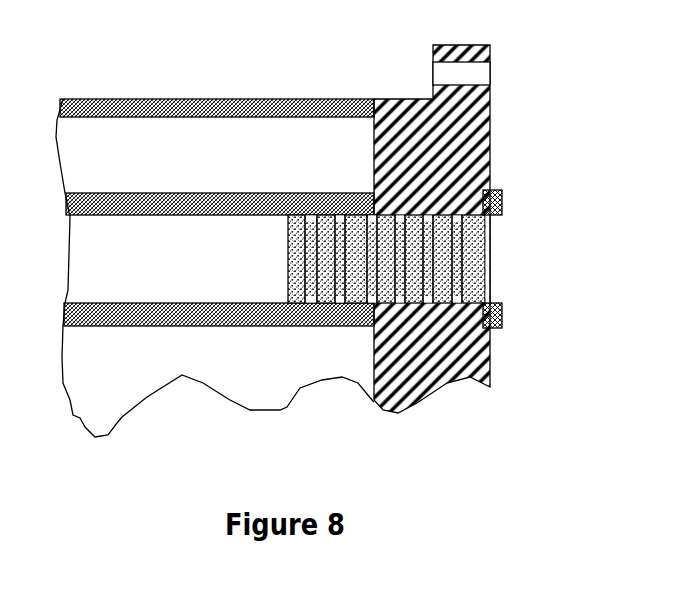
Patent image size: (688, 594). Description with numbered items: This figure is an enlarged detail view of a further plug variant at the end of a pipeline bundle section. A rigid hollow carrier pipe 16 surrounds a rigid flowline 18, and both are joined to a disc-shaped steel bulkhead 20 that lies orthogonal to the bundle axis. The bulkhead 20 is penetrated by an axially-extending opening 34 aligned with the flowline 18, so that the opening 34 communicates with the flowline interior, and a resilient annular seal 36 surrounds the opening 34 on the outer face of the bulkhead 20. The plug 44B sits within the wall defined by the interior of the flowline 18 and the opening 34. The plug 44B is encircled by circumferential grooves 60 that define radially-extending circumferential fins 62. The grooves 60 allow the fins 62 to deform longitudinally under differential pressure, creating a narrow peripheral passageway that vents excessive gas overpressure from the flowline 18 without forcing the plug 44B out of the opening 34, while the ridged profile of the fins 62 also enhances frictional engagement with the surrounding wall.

The carrier pipe 16 is at (203, 100).
The flowline 18 is at (197, 202).
The bulkhead 20 is at (457, 132).
The opening 34 is at (490, 255).
The seal 36 is at (502, 317).
The plug 44B is at (275, 268).
The circumferential groove 60 is at (320, 326).
The fin 62 is at (333, 208).